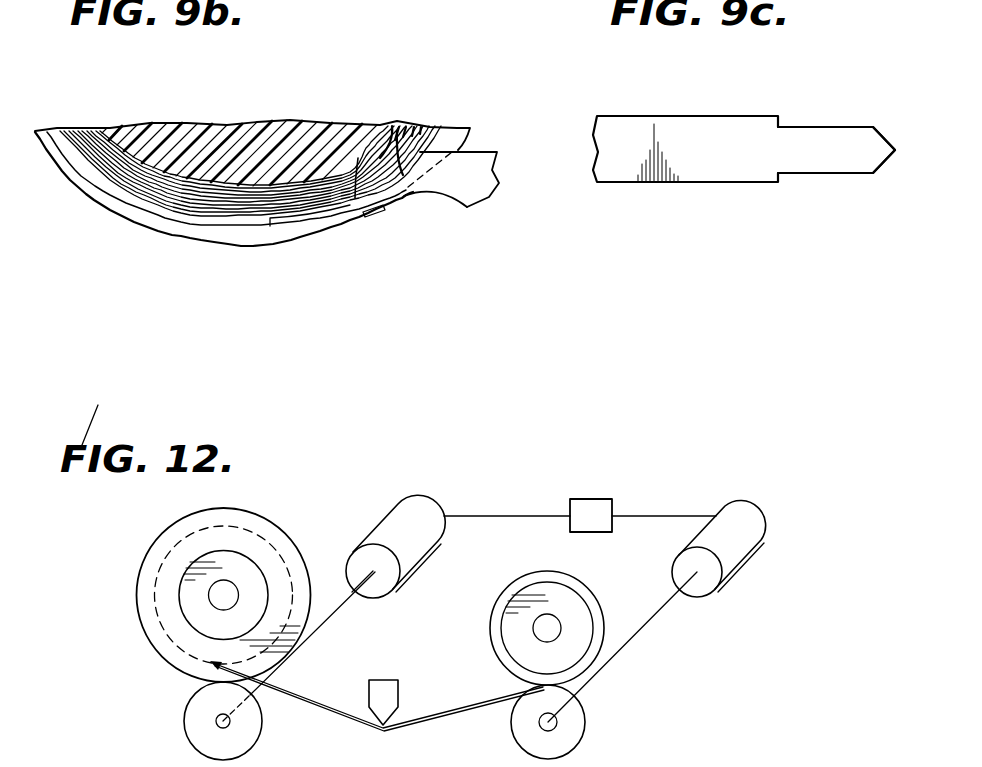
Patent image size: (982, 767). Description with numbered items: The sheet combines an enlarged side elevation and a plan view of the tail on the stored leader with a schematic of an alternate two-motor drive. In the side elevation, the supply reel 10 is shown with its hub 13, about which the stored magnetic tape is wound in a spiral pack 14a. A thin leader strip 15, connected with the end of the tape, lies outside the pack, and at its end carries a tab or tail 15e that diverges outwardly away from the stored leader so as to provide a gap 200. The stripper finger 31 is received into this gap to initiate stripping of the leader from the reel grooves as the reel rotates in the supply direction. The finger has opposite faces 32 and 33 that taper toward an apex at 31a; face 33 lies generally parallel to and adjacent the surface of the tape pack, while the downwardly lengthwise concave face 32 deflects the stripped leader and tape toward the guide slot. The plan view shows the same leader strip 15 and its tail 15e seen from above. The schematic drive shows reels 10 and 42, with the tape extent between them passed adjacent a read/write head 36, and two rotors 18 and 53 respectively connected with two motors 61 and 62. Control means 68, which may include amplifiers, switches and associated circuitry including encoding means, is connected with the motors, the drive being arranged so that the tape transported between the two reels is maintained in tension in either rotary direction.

In FIG. 9b, the supply reel 10 is at (110, 212).
In FIG. 12, the supply reel 10 is at (130, 607).
In FIG. 9b, the hub 13 is at (165, 143).
In FIG. 9b, the spiral pack 14a is at (218, 190).
In FIG. 9b, the leader strip 15 is at (185, 219).
In FIG. 9c, the leader strip 15 is at (693, 165).
In FIG. 9b, the tab or tail 15e is at (313, 224).
In FIG. 9c, the tab or tail 15e is at (838, 130).
In FIG. 12, the rotor 18 is at (200, 740).
In FIG. 9b, the stripper finger 31 is at (478, 154).
In FIG. 9b, the apex 31a is at (358, 160).
In FIG. 9b, the concave face 32 is at (400, 197).
In FIG. 9b, the face 33 is at (397, 127).
In FIG. 12, the read/write head 36 is at (380, 687).
In FIG. 12, the reel 42 is at (500, 600).
In FIG. 12, the rotor 53 is at (567, 735).
In FIG. 12, the motor 61 is at (397, 520).
In FIG. 12, the motor 62 is at (750, 540).
In FIG. 12, the control means 68 is at (592, 503).
In FIG. 9b, the gap 200 is at (350, 209).